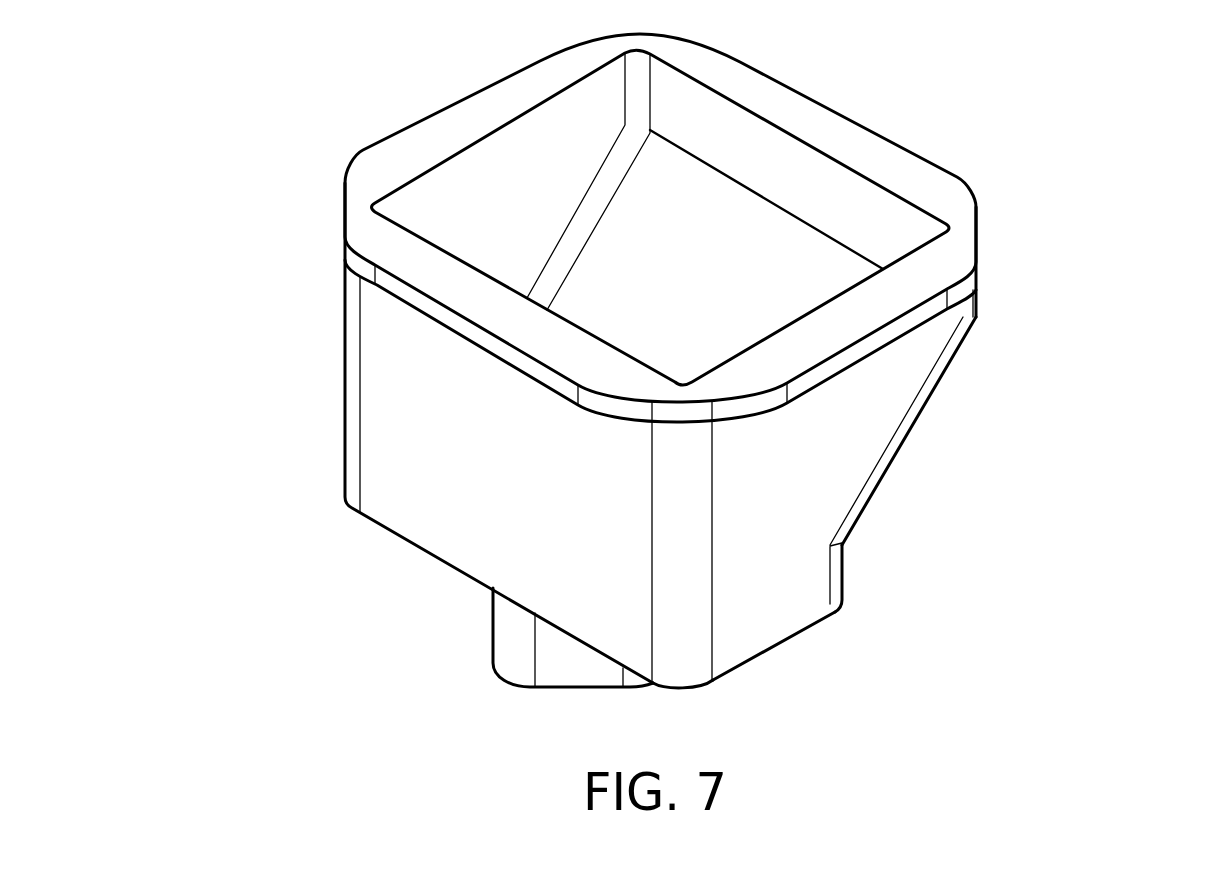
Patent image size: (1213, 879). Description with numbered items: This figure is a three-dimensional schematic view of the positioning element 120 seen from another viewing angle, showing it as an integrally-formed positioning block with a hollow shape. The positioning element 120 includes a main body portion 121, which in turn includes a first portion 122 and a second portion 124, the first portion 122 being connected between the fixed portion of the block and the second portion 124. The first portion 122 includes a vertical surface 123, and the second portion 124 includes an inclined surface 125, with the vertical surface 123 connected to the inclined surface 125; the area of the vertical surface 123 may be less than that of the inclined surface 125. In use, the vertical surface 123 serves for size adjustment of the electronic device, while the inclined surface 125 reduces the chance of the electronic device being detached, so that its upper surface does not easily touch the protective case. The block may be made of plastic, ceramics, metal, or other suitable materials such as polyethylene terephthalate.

The positioning element 120 is at (1177, 711).
The main body portion 121 is at (530, 435).
The first portion 122 is at (732, 620).
The vertical surface 123 is at (843, 574).
The second portion 124 is at (722, 468).
The inclined surface 125 is at (945, 365).